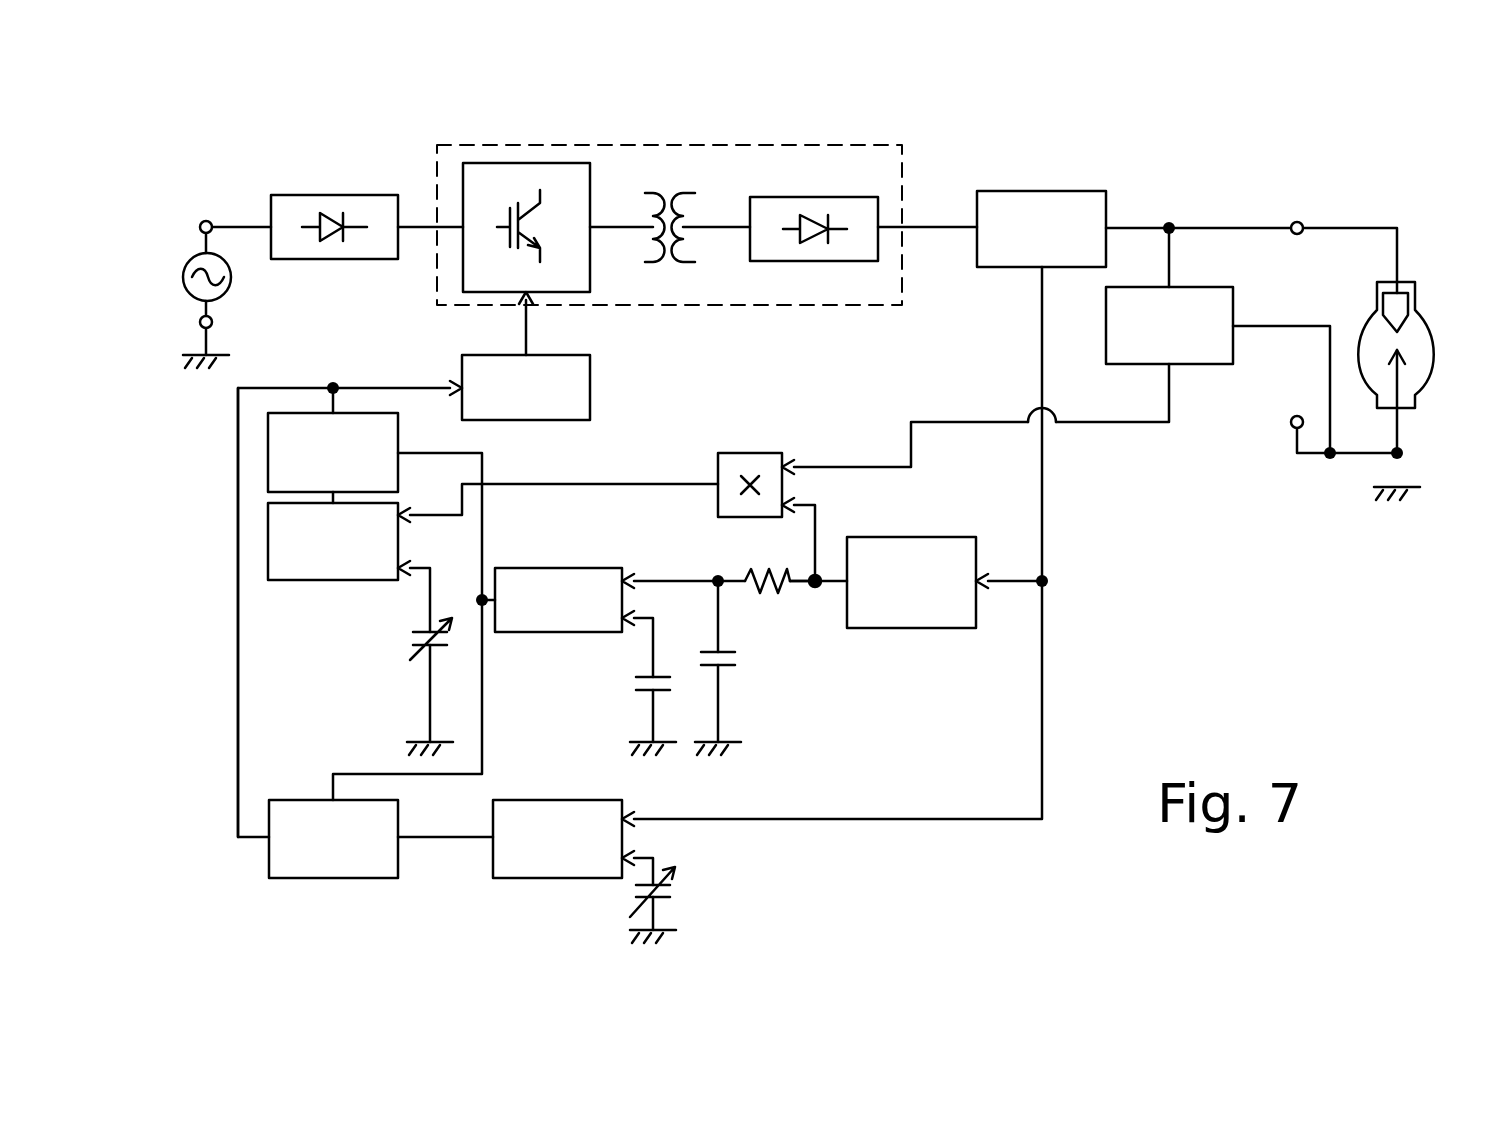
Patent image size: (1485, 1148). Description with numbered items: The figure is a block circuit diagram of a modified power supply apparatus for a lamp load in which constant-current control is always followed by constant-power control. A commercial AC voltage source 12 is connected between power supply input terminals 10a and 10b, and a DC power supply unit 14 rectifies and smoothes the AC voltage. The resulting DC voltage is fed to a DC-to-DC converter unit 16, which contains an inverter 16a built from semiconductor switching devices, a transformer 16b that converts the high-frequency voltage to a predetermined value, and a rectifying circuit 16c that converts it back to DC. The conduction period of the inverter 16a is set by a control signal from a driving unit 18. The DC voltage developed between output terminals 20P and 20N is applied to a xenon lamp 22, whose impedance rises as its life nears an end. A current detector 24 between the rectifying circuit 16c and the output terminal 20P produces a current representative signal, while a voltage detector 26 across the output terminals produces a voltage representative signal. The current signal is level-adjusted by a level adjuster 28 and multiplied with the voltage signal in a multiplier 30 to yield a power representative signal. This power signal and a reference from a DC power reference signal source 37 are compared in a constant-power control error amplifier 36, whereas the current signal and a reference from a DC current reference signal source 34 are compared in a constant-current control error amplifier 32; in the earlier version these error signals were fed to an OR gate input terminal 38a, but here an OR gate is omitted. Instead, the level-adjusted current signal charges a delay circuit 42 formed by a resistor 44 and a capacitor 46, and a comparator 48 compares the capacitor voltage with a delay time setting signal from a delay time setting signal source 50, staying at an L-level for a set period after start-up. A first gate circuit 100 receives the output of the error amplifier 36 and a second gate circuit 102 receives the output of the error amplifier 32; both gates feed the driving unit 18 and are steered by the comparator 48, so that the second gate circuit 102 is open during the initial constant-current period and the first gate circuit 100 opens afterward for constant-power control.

The commercial AC voltage source 12 is at (208, 258).
The power supply input terminal 10a is at (210, 221).
The power supply input terminal 10b is at (213, 322).
The DC power supply unit 14 is at (298, 205).
The DC-to-DC converter unit 16 is at (613, 157).
The inverter 16a is at (568, 275).
The transformer 16b is at (668, 255).
The rectifying circuit 16c is at (828, 243).
The driving unit 18 is at (592, 400).
The current detector 24 is at (1000, 250).
The voltage detector 26 is at (1225, 312).
The output terminal 20P is at (1299, 221).
The output terminal 20N is at (1297, 428).
The xenon lamp 22 is at (1418, 340).
The level adjuster 28 is at (963, 563).
The multiplier 30 is at (742, 462).
The first gate circuit 100 is at (360, 427).
The second gate circuit 102 is at (282, 812).
The constant-power control error amplifier 36 is at (383, 537).
The DC power reference signal source 37 is at (413, 637).
The input terminal 38a is at (206, 612).
The comparator 48 is at (572, 573).
The delay circuit 42 is at (767, 602).
The resistor 44 is at (790, 585).
The capacitor 46 is at (727, 663).
The delay time setting signal source 50 is at (643, 677).
The constant-current control error amplifier 32 is at (505, 808).
The DC current reference signal source 34 is at (677, 890).